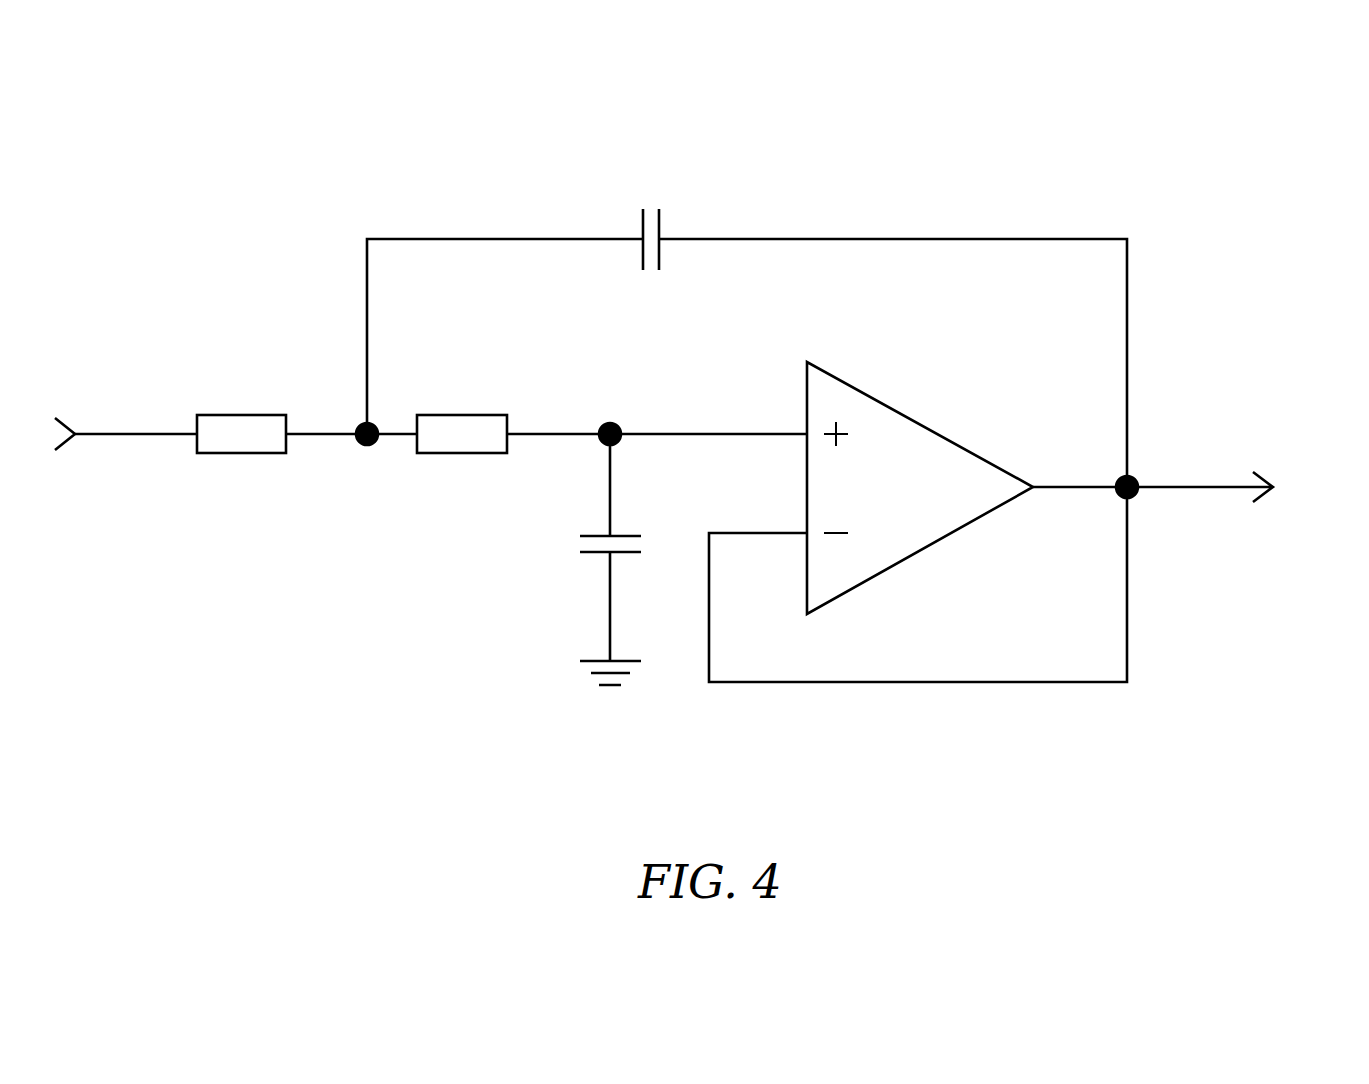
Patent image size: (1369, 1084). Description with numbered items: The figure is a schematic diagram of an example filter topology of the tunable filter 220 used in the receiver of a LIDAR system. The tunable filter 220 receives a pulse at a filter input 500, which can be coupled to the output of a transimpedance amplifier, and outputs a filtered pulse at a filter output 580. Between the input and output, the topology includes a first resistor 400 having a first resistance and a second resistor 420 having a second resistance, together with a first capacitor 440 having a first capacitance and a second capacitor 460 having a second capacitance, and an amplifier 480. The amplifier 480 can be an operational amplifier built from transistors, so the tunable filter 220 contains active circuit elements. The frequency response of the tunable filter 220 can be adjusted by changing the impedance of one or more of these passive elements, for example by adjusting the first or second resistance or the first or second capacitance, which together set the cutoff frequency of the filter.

The tunable filter 220 is at (1262, 129).
The filter input 500 is at (126, 430).
The first resistor 400 is at (213, 414).
The second resistor 420 is at (434, 414).
The first capacitor 440 is at (578, 544).
The second capacitor 460 is at (627, 224).
The amplifier 480 is at (906, 498).
The filter output 580 is at (1136, 478).